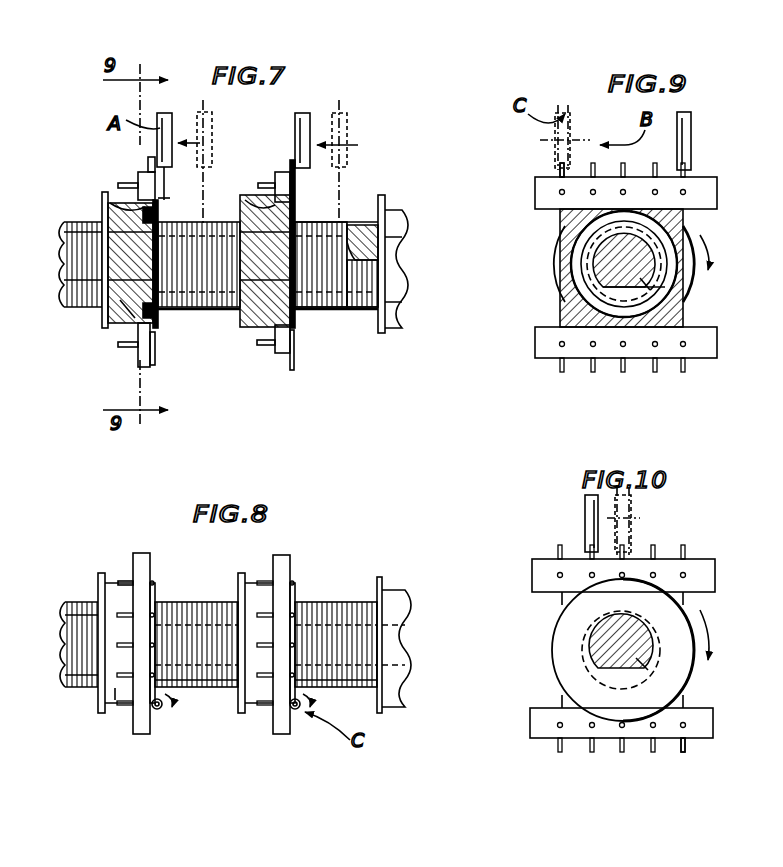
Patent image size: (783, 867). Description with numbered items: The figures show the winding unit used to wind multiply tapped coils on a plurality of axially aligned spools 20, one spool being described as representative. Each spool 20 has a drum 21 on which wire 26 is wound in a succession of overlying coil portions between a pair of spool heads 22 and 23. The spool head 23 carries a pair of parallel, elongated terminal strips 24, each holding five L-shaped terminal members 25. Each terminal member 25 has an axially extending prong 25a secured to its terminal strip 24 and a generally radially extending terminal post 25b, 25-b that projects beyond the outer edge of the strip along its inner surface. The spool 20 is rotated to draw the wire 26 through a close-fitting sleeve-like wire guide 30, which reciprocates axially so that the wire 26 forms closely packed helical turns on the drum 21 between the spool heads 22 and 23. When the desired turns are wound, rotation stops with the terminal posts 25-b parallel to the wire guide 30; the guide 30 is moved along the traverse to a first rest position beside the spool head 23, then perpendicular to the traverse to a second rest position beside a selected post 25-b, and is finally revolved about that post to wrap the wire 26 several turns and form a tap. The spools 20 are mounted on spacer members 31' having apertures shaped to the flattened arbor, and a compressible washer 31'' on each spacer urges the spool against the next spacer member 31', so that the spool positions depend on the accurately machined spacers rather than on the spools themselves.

In FIG. 7, the spool 20 is at (236, 192).
In FIG. 9, the spool 20 is at (545, 292).
In FIG. 10, the spool 20 is at (545, 672).
In FIG. 8, the spool 20 is at (205, 594).
In FIG. 7, the drum 21 is at (206, 300).
In FIG. 9, the drum 21 is at (690, 290).
In FIG. 10, the drum 21 is at (598, 668).
In FIG. 8, the drum 21 is at (180, 592).
In FIG. 7, the spool head 22 is at (105, 330).
In FIG. 8, the spool head 22 is at (100, 713).
In FIG. 7, the spool head 23 is at (158, 325).
In FIG. 9, the spool head 23 is at (560, 262).
In FIG. 10, the spool head 23 is at (567, 645).
In FIG. 8, the spool head 23 is at (152, 565).
In FIG. 7, the terminal strip 24 is at (140, 345).
In FIG. 9, the terminal strip 24 is at (535, 198).
In FIG. 10, the terminal strip 24 is at (532, 578).
In FIG. 8, the terminal strip 24 is at (135, 735).
In FIG. 7, the terminal member 25 is at (148, 158).
In FIG. 9, the terminal member 25 is at (692, 162).
In FIG. 10, the terminal member 25 is at (657, 552).
In FIG. 8, the terminal member 25 is at (297, 600).
In FIG. 7, the prong 25a is at (118, 186).
In FIG. 8, the prong 25a is at (118, 584).
In FIG. 7, the terminal post 25b is at (155, 350).
In FIG. 9, the terminal post 25-b is at (562, 165).
In FIG. 10, the terminal post 25-b is at (683, 752).
In FIG. 7, the wire 26 is at (180, 194).
In FIG. 7, the wire guide 30 is at (180, 107).
In FIG. 9, the wire guide 30 is at (590, 140).
In FIG. 10, the wire guide 30 is at (585, 514).
In FIG. 8, the wire guide 30 is at (162, 712).
In FIG. 7, the spacer member 31' is at (89, 345).
In FIG. 9, the spacer member 31' is at (725, 286).
In FIG. 8, the spacer member 31' is at (152, 655).
In FIG. 7, the compressible washer 31'' is at (154, 253).
In FIG. 9, the compressible washer 31'' is at (670, 264).